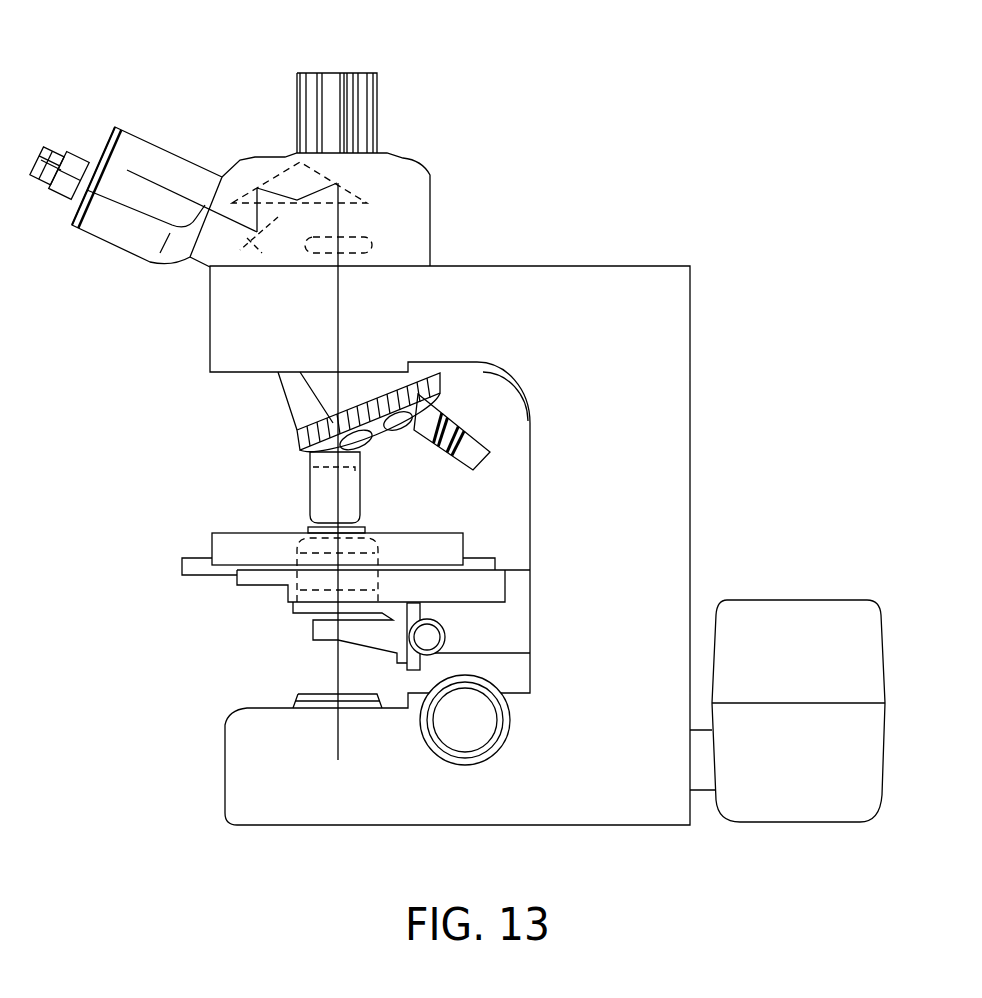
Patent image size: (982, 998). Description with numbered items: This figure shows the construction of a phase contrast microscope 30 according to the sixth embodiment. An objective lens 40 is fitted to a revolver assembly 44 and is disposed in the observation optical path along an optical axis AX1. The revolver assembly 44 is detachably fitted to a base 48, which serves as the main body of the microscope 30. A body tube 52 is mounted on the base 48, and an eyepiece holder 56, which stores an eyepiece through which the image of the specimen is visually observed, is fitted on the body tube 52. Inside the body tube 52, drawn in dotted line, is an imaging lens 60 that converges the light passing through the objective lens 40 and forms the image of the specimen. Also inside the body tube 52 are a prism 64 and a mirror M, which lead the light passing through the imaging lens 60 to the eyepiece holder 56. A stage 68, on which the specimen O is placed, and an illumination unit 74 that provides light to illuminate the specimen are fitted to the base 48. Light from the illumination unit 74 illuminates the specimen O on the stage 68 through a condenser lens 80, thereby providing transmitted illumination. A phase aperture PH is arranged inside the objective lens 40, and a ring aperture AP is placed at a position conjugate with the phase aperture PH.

The phase contrast microscope 30 is at (627, 86).
The objective lens 40 is at (310, 484).
The revolver assembly 44 is at (297, 445).
The base 48 is at (645, 282).
The body tube 52 is at (408, 170).
The eyepiece holder 56 is at (140, 153).
The imaging lens 60 is at (358, 237).
The prism 64 is at (270, 176).
The stage 68 is at (222, 548).
The illumination unit 74 is at (780, 598).
The condenser lens 80 is at (283, 585).
The mirror M is at (264, 243).
The phase aperture PH is at (356, 480).
The specimen (object) O is at (312, 530).
The ring aperture AP is at (303, 617).
The optical axis AX1 is at (338, 745).